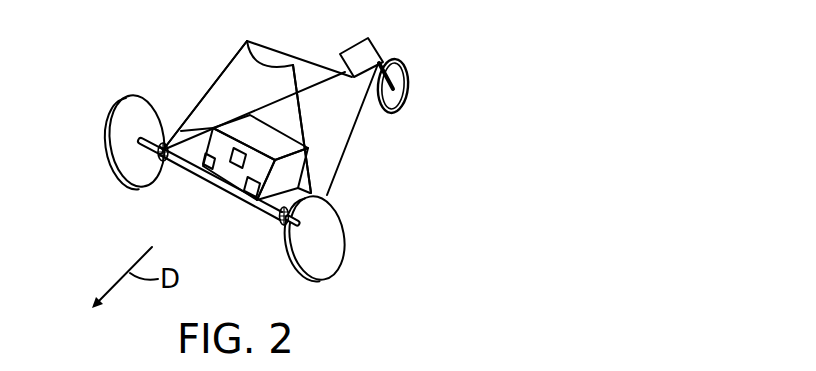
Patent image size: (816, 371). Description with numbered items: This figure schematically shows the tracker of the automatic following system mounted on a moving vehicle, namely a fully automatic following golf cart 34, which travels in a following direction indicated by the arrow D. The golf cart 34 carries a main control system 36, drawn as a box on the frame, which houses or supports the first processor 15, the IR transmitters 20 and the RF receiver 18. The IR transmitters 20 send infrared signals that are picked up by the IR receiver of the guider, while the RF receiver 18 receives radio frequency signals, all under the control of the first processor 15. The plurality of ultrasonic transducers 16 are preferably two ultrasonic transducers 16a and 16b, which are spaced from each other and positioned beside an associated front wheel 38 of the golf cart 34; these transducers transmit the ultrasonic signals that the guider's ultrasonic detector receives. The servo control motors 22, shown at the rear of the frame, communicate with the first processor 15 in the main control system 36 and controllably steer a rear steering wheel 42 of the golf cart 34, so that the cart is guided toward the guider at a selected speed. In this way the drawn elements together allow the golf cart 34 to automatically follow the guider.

The first processor 15 is at (181, 118).
The ultrasonic transducers 16 is at (146, 196).
The ultrasonic transducer 16a is at (166, 163).
The ultrasonic transducer 16b is at (280, 223).
The RF receiver 18 is at (302, 152).
The IR transmitters 20 is at (261, 139).
The servo control motors 22 is at (380, 42).
The golf cart 34 is at (375, 160).
The main control system 36 is at (273, 142).
The front wheel 38 is at (132, 121).
The rear steering wheel 42 is at (408, 78).